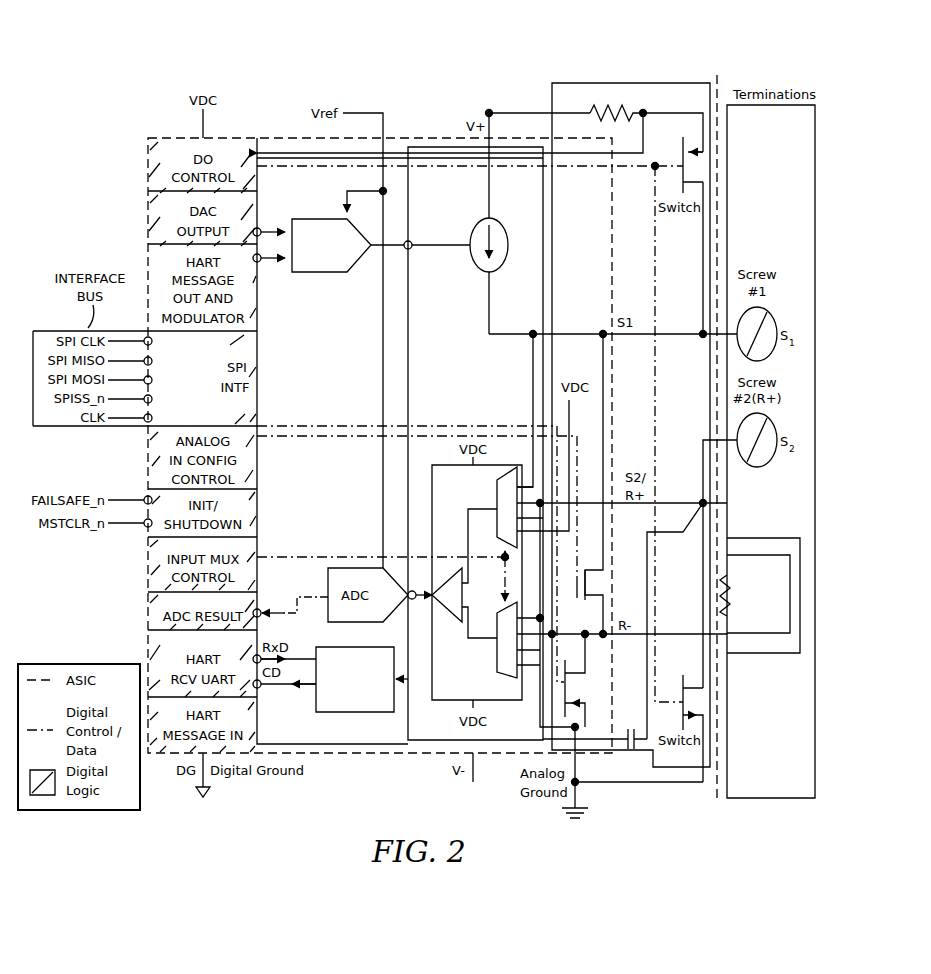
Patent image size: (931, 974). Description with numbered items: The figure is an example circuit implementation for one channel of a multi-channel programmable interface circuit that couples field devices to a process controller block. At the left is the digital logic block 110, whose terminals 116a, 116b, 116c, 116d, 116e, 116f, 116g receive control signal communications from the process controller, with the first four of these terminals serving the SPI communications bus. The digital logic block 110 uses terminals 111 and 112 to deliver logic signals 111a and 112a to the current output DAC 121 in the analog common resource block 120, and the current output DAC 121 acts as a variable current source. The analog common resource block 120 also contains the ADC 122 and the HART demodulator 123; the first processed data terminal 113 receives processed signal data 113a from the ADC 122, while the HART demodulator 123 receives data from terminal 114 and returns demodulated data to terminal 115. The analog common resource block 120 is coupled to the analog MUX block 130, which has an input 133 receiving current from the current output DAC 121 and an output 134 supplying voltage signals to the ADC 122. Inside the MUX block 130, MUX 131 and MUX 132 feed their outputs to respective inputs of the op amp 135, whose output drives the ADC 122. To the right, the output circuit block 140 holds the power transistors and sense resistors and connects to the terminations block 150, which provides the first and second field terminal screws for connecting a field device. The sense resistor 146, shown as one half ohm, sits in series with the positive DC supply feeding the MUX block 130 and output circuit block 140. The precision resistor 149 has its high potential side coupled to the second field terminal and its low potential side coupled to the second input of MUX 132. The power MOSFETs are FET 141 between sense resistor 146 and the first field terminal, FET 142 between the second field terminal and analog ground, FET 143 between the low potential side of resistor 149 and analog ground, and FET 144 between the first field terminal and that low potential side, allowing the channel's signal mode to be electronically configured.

The digital logic block 110 is at (156, 140).
The terminal 111 is at (260, 229).
The logic signals 111a is at (270, 233).
The terminal 112 is at (260, 261).
The logic signals 112a is at (270, 259).
The first processed data terminal 113 is at (261, 608).
The processed signal data 113a is at (290, 614).
The terminal 114 is at (253, 650).
The terminal 115 is at (262, 690).
The terminal 116a is at (153, 343).
The terminal 116b is at (153, 363).
The terminal 116c is at (153, 382).
The terminal 116d is at (153, 401).
The terminal 116e is at (153, 420).
The terminal 116f is at (146, 497).
The terminal 116g is at (146, 527).
The analog common resource block 120 is at (409, 200).
The current output DAC 121 is at (343, 273).
The ADC 122 is at (352, 568).
The HART demodulator 123 is at (353, 712).
The analog MUX block 130 is at (540, 230).
The MUX 131 is at (497, 496).
The MUX 132 is at (497, 674).
The input 133 is at (414, 240).
The output 134 is at (408, 610).
The operational amplifier 135 is at (447, 612).
The output circuit block 140 is at (644, 83).
The FET 141 is at (680, 150).
The FET 142 is at (680, 681).
The FET 143 is at (567, 690).
The FET 144 is at (592, 584).
The sense resistor 146 is at (590, 110).
The resistor 149 is at (760, 595).
The terminations block 150 is at (723, 93).